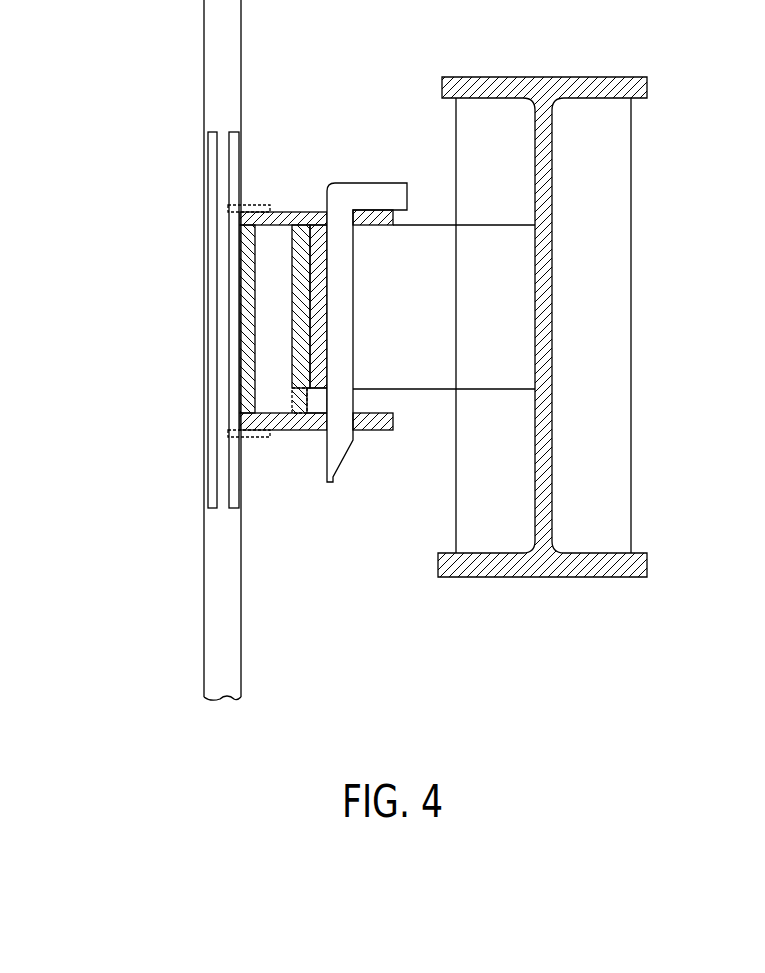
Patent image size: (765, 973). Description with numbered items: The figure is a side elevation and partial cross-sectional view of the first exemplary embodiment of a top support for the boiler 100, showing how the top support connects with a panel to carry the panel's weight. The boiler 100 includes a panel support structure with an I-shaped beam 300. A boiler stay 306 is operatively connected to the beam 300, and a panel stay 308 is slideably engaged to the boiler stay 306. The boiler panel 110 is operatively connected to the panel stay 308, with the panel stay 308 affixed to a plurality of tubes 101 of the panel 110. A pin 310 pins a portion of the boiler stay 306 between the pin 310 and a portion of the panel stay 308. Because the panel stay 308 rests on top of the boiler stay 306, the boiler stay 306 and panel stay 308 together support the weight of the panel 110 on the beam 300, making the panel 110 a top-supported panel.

The boiler 100 is at (297, 356).
The tubes 101 is at (205, 333).
The panel 110 is at (163, 475).
The beam 300 is at (592, 75).
The boiler stay 306 is at (423, 195).
The panel stay 308 is at (296, 175).
The pin 310 is at (370, 197).